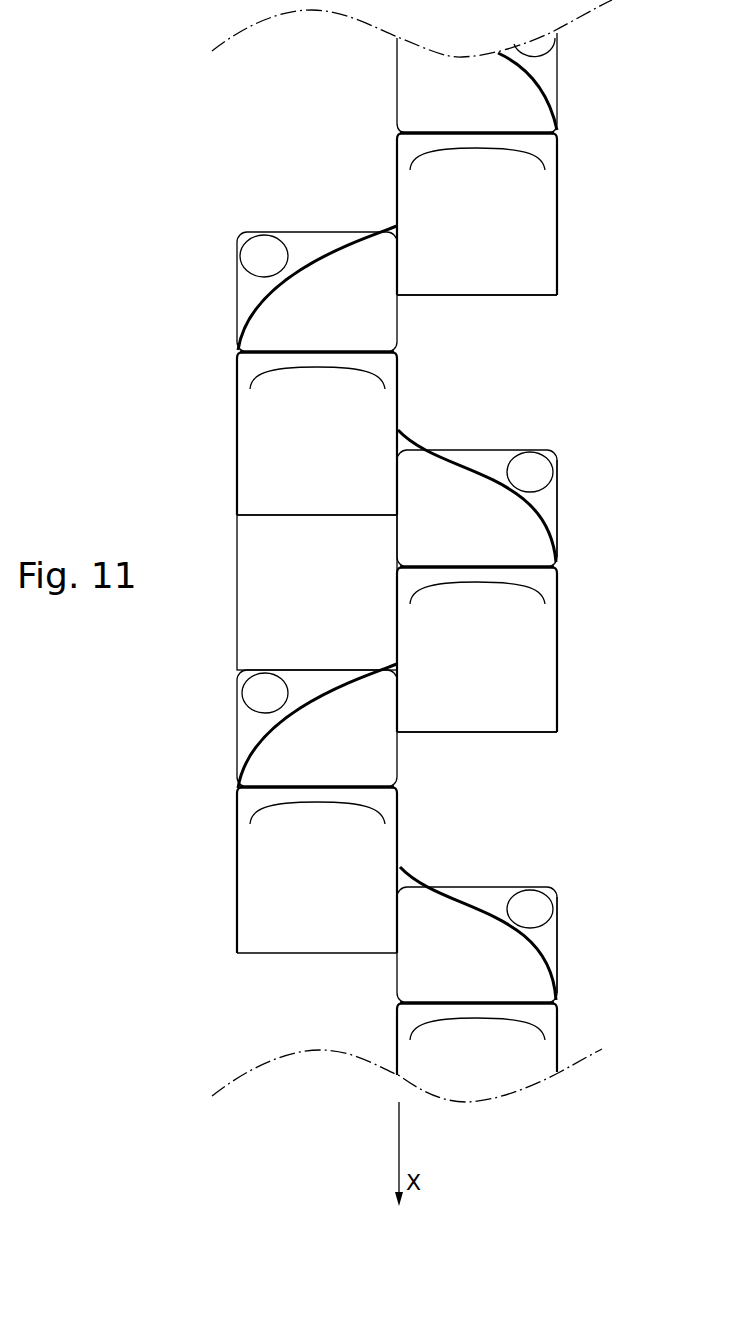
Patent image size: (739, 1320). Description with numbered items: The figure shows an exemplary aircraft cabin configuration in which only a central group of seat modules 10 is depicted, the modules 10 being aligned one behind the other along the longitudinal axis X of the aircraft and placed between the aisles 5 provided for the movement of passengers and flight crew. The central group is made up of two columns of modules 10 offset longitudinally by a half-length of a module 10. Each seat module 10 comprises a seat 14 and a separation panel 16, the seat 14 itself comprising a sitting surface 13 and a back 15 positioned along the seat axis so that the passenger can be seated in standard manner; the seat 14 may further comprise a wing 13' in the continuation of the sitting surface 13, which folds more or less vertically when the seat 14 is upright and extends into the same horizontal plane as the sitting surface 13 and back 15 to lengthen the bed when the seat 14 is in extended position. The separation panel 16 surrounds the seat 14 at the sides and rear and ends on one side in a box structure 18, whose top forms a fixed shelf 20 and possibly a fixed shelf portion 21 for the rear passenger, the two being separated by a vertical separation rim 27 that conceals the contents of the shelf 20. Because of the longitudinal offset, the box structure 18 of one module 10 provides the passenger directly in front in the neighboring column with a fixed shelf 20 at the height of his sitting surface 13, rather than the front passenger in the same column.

The aisle 5 is at (153, 1133).
The seat module 10 is at (573, 318).
The sitting surface 13 is at (397, 604).
The wing 13' is at (317, 592).
The seat 14 is at (480, 298).
The back 15 is at (250, 389).
The separation panel 16 is at (400, 432).
The box structure 18 is at (560, 532).
The fixed shelf 20 is at (313, 319).
The fixed shelf portion 21 is at (529, 454).
The separation rim 27 is at (554, 507).